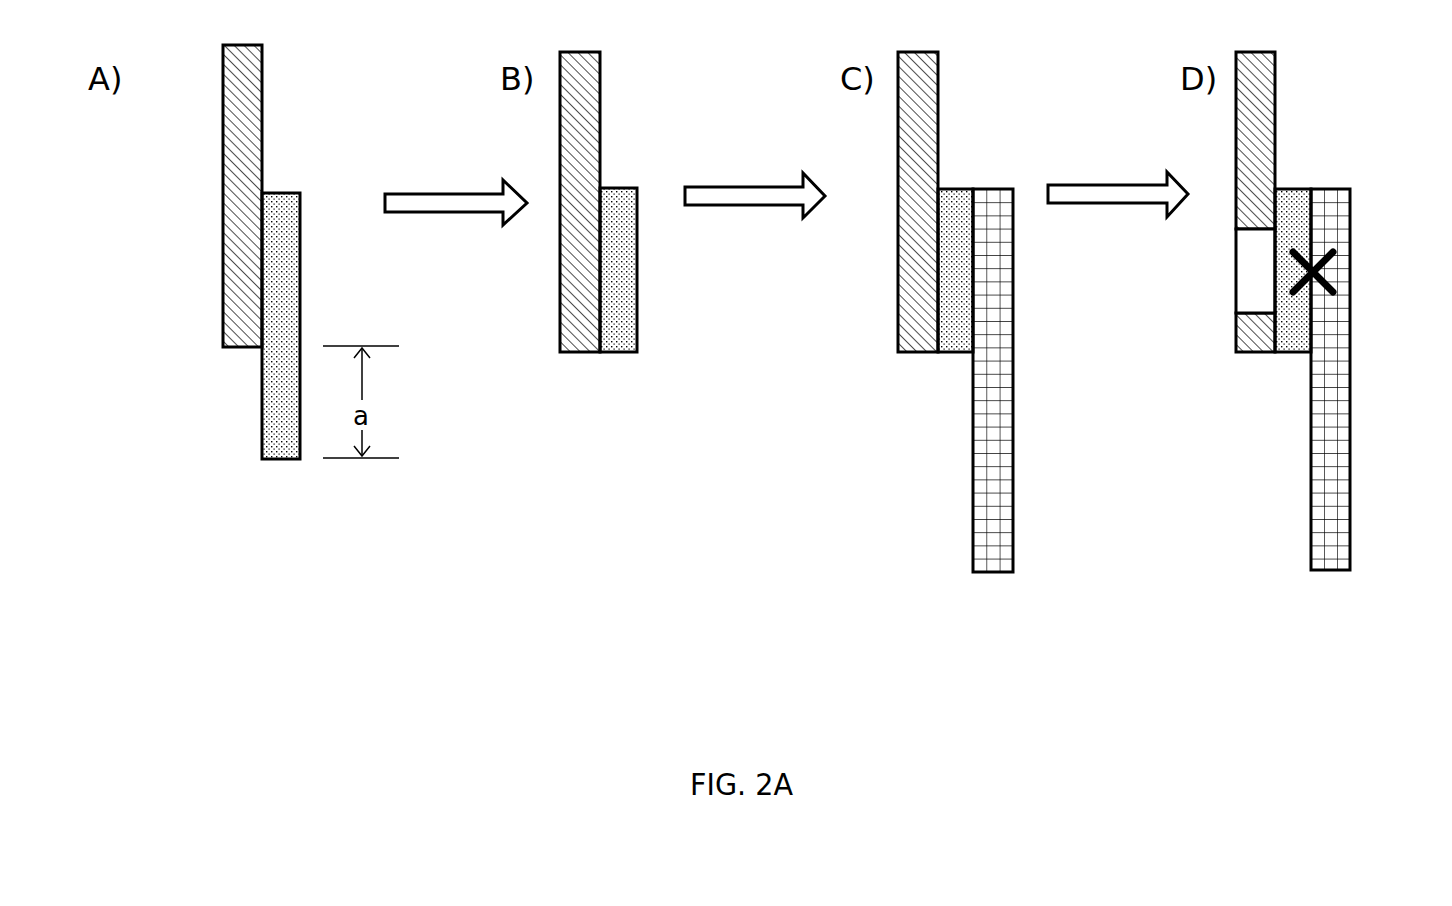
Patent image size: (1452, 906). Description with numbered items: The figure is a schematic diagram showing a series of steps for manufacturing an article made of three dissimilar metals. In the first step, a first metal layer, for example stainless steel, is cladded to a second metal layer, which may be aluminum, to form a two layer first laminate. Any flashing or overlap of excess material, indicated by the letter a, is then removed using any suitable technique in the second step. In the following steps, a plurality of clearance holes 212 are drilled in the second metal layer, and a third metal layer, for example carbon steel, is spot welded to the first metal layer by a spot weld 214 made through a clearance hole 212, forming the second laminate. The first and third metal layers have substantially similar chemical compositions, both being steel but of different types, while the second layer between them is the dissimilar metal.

The clearance hole 212 is at (1235, 275).
The spot weld 214 is at (1322, 275).